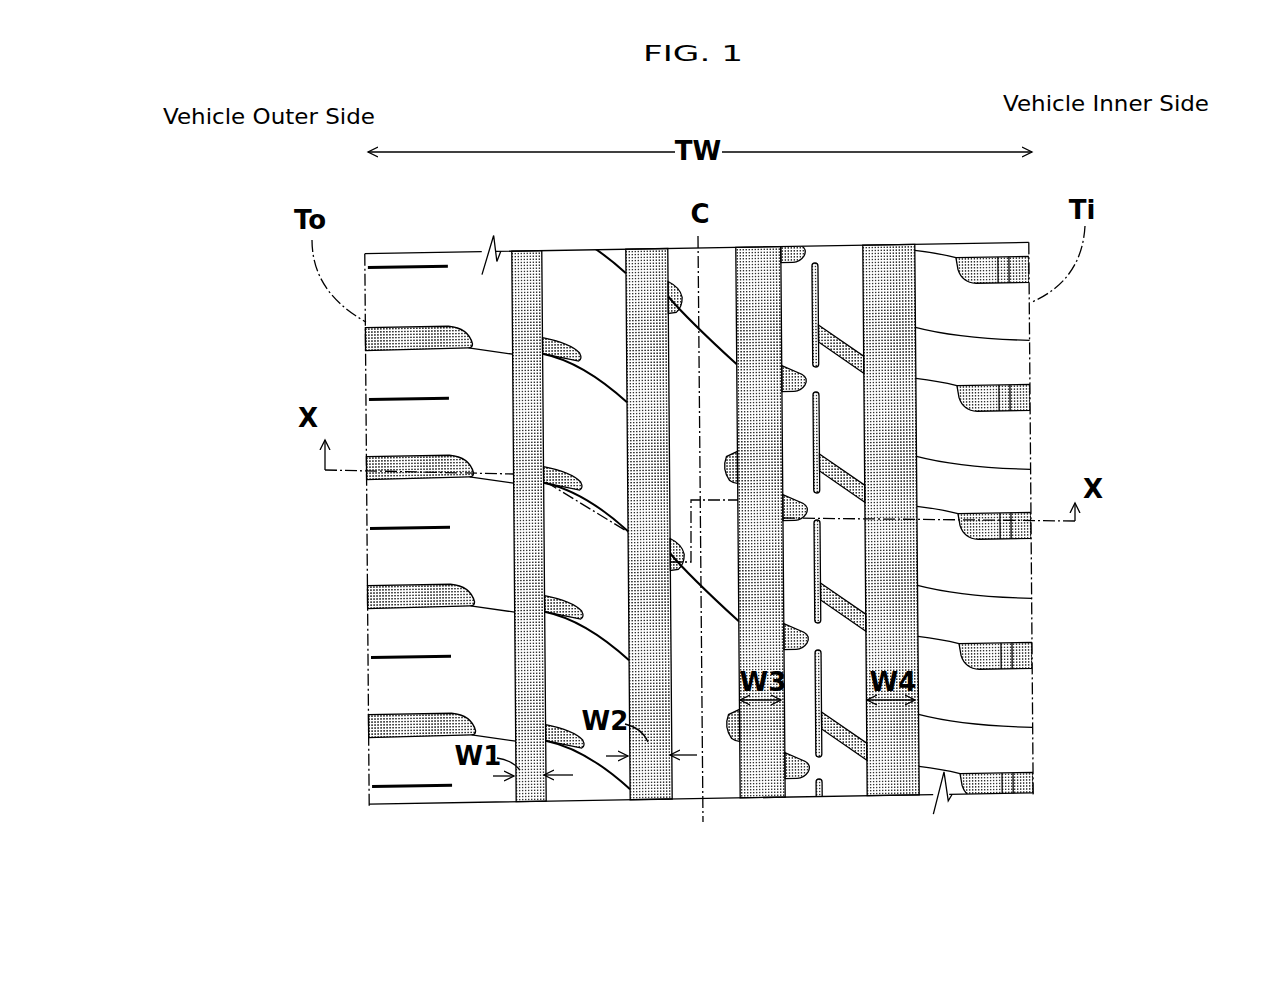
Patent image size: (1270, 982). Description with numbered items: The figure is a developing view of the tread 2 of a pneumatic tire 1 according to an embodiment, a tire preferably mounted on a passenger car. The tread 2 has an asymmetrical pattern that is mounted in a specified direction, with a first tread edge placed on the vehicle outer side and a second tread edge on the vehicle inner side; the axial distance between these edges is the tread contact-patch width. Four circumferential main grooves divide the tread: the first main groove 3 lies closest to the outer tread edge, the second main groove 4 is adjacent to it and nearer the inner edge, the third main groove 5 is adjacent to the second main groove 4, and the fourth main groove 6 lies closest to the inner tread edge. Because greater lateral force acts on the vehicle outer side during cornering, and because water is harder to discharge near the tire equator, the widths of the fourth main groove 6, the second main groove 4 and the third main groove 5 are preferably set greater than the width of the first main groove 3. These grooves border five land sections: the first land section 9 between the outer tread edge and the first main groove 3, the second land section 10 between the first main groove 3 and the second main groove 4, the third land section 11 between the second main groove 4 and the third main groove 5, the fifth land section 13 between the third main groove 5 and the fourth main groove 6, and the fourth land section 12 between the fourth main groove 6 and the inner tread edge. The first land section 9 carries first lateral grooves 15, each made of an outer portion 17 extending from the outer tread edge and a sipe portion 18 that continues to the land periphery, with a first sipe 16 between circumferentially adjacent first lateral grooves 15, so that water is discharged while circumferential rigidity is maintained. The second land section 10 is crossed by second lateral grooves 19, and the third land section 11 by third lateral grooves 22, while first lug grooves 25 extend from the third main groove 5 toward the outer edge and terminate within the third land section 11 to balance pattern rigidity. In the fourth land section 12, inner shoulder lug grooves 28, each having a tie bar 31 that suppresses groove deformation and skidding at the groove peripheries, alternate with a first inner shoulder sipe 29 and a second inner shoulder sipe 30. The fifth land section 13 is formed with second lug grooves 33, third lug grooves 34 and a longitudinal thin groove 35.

The pneumatic tire 1 is at (1212, 160).
The tread 2 is at (1130, 243).
The first main groove 3 is at (527, 268).
The second main groove 4 is at (645, 272).
The third main groove 5 is at (755, 272).
The fourth main groove 6 is at (885, 272).
The first land section 9 is at (448, 262).
The second land section 10 is at (570, 272).
The third land section 11 is at (682, 272).
The fourth land section 12 is at (965, 295).
The fifth land section 13 is at (797, 282).
The first lateral groove 15 is at (384, 596).
The first sipe 16 is at (393, 659).
The outer portion 17 is at (397, 584).
The sipe portion 18 is at (495, 603).
The second lateral groove 19 is at (588, 645).
The third lateral groove 22 is at (718, 614).
The first lug groove 25 is at (731, 745).
The inner shoulder lug groove 28 is at (1000, 672).
The first inner shoulder sipe 29 is at (925, 645).
The second inner shoulder sipe 30 is at (990, 724).
The tie bar 31 is at (1005, 396).
The second lug groove 33 is at (800, 777).
The third lug groove 34 is at (892, 758).
The longitudinal thin groove 35 is at (840, 747).